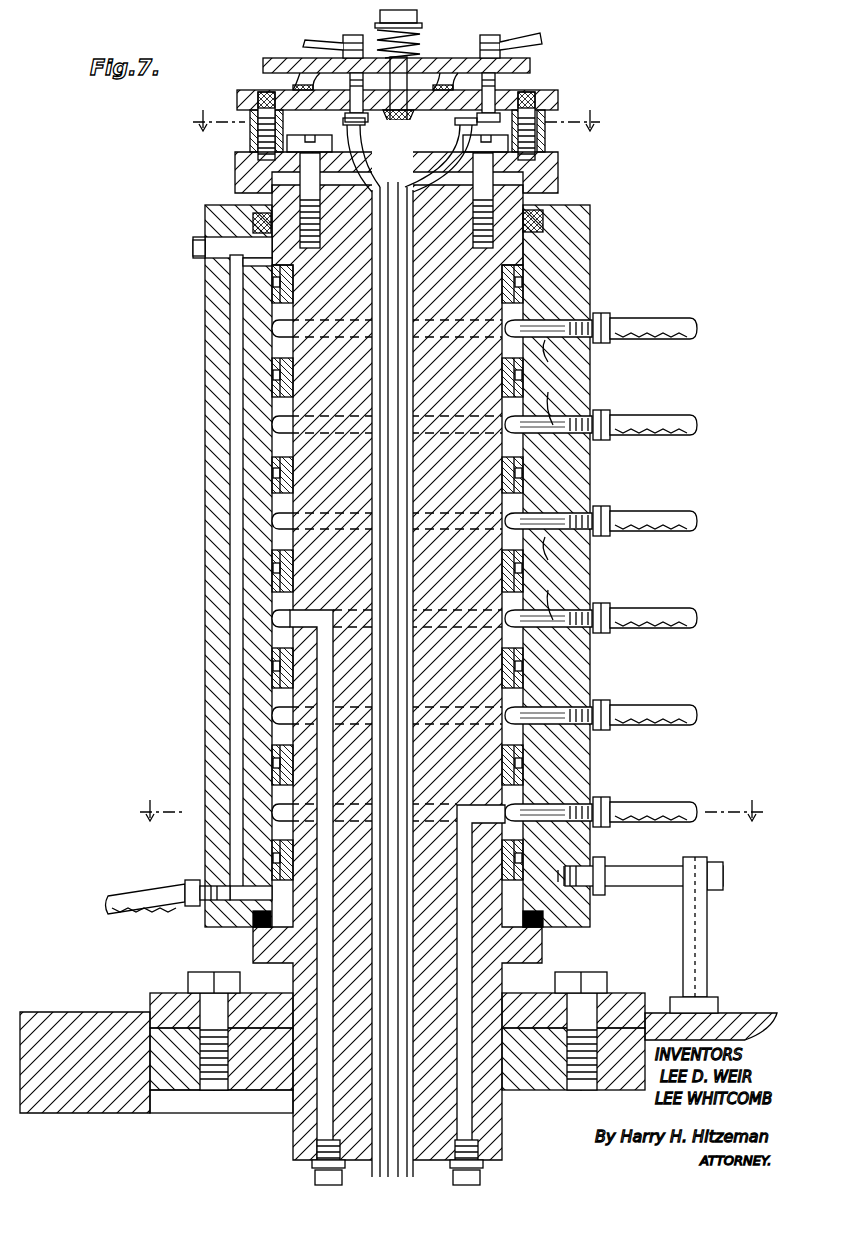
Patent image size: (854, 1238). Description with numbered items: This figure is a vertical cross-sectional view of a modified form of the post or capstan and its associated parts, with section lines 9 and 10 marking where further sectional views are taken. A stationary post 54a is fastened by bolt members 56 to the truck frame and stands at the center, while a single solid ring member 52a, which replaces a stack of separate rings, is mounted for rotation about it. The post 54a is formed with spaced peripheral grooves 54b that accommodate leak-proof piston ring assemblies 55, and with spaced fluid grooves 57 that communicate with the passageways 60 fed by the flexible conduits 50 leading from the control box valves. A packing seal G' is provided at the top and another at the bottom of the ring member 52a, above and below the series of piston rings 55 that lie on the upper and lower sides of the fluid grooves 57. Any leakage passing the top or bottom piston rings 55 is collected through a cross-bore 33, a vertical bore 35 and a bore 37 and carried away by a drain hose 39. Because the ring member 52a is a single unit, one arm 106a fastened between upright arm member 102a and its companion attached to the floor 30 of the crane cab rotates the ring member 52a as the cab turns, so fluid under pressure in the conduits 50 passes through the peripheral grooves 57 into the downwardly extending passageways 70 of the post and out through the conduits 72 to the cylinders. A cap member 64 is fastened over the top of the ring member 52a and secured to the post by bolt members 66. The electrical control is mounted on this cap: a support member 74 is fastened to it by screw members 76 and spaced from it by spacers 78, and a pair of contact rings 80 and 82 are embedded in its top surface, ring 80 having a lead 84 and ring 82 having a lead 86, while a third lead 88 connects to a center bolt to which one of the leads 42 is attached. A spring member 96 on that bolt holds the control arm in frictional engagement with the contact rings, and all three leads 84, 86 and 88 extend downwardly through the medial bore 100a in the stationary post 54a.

The spring member 96 is at (418, 45).
The contact ring 80 is at (300, 62).
The contact ring 82 is at (445, 85).
The support member 74 is at (560, 100).
The lead 42 is at (558, 43).
The screw members 76 is at (265, 92).
The spacers 78 is at (252, 130).
The cap member 64 is at (237, 180).
The bolt members 66 is at (321, 180).
The stationary post 54a is at (315, 540).
The solid ring member 52a is at (218, 690).
The vertical bore 35 is at (232, 487).
The cross-bore 33 is at (240, 283).
The leak-proof piston ring assemblies 55 is at (280, 287).
The packing seal G' is at (347, 582).
The peripheral grooves 57 is at (277, 330).
The peripheral grooves 54b is at (504, 285).
The lead 84 is at (400, 240).
The lead 86 is at (390, 265).
The lead 88 is at (376, 290).
The flexible conduits 50 is at (662, 317).
The passageway 60 is at (553, 400).
The medial bore 100a is at (365, 1112).
The downwardly extending passageways 70 is at (325, 937).
The floor 30 is at (735, 1016).
The bolt members 56 is at (208, 1082).
The conduits 72 is at (312, 1173).
The arm 106a is at (655, 887).
The upright arm member 102a is at (705, 947).
The bore 37 is at (250, 884).
The drain hose 39 is at (138, 896).
The section line 9- 9 is at (396, 111).
The section line 10- 10 is at (452, 824).